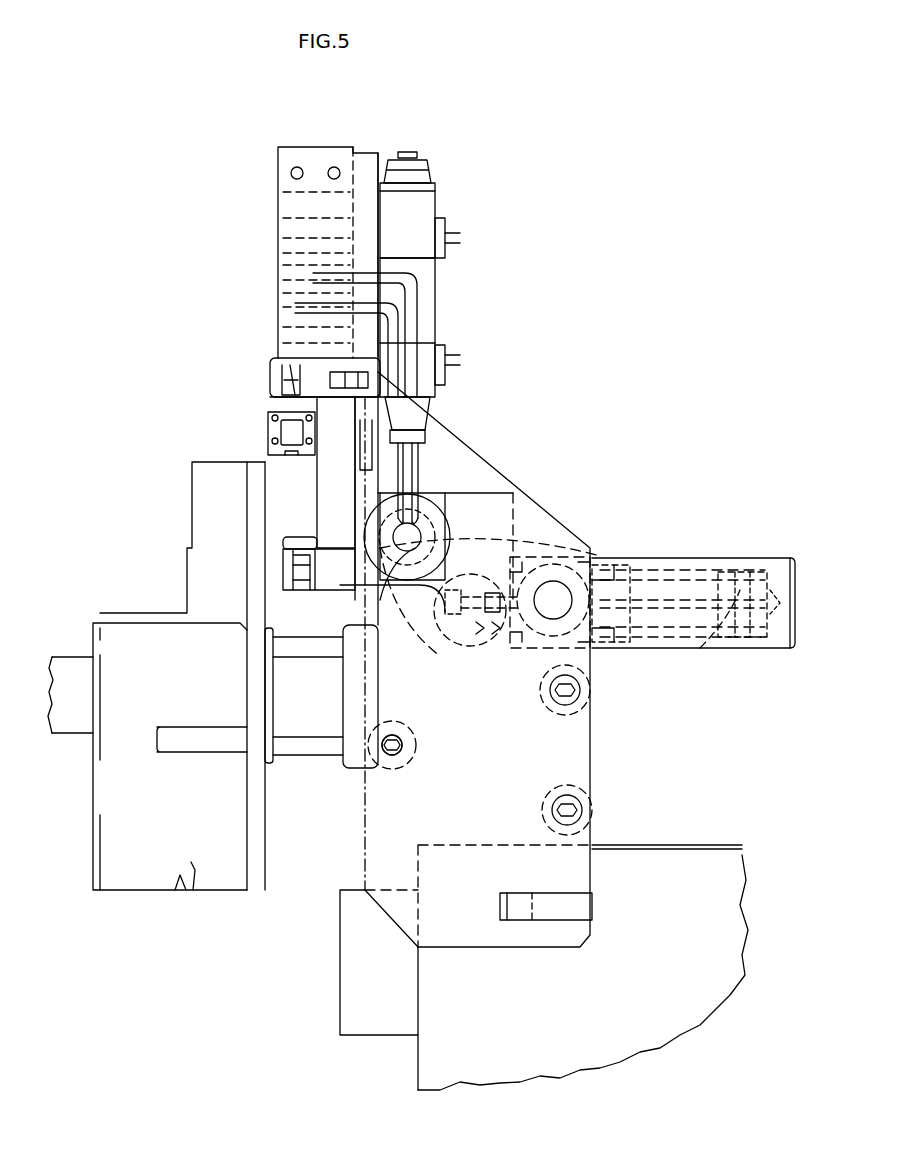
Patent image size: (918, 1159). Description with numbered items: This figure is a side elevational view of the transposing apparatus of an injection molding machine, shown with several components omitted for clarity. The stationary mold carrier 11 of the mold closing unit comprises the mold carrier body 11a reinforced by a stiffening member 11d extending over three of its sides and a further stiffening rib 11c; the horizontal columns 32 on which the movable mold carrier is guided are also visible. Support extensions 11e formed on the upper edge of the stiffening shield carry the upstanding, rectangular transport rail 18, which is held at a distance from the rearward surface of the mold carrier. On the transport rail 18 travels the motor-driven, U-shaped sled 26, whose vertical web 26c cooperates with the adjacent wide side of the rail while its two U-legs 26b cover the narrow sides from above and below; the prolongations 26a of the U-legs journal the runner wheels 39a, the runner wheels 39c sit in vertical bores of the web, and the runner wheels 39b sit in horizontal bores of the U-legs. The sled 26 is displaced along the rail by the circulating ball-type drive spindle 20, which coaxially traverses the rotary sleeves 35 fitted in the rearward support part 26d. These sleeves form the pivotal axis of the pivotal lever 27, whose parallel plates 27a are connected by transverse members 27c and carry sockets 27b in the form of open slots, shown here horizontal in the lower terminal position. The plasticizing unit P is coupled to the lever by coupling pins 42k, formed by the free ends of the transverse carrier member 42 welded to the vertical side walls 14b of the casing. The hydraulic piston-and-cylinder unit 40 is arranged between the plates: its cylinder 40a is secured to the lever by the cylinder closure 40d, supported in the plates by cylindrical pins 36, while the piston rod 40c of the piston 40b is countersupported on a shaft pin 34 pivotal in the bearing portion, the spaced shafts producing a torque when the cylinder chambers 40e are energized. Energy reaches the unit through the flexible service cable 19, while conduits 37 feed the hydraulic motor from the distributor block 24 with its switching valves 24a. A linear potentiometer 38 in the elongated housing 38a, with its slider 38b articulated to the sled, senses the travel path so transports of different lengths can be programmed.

The flexible service cable 19 is at (291, 172).
The switching valves 24a is at (420, 210).
The distributor block 24 is at (450, 322).
The conduits 37 is at (402, 330).
The linear potentiometer 38 is at (268, 400).
The elongated housing 38a is at (272, 378).
The slider 38b is at (446, 365).
The prolongations 26a is at (300, 385).
The U-legs 26b is at (184, 585).
The runner wheels 39a is at (292, 360).
The runner wheels 39b is at (318, 520).
The runner wheels 39c is at (352, 462).
The support extensions 11e is at (273, 473).
The stiffening rib 11c is at (213, 495).
The stiffening member 11d is at (255, 492).
The stationary mold carrier 11 is at (130, 905).
The mold carrier body 11a is at (190, 880).
The horizontal columns 32 is at (76, 672).
The transport rail 18 is at (338, 592).
The sled 26 is at (486, 470).
The vertical web 26c is at (380, 490).
The rearward support part 26d is at (398, 478).
The rotary sleeves 35 is at (455, 520).
The drive spindle 20 is at (520, 543).
The shaft pin 34 is at (456, 622).
The cylindrical pins 36 is at (548, 612).
The hydraulic piston-and-cylinder unit 40 is at (691, 556).
The cylinder 40a is at (780, 632).
The piston 40b is at (735, 642).
The piston rod 40c is at (700, 590).
The cylinder closure 40d is at (590, 560).
The cylinder chambers 40e is at (775, 605).
The transverse members 27c is at (415, 742).
The plasticizing unit P is at (710, 845).
The pivotal lever 27 is at (362, 894).
The parallel plates 27a is at (435, 905).
The sockets 27b is at (505, 910).
The transverse carrier member 42 is at (520, 905).
The coupling pins 42k is at (555, 910).
The vertical side walls 14b is at (632, 1022).